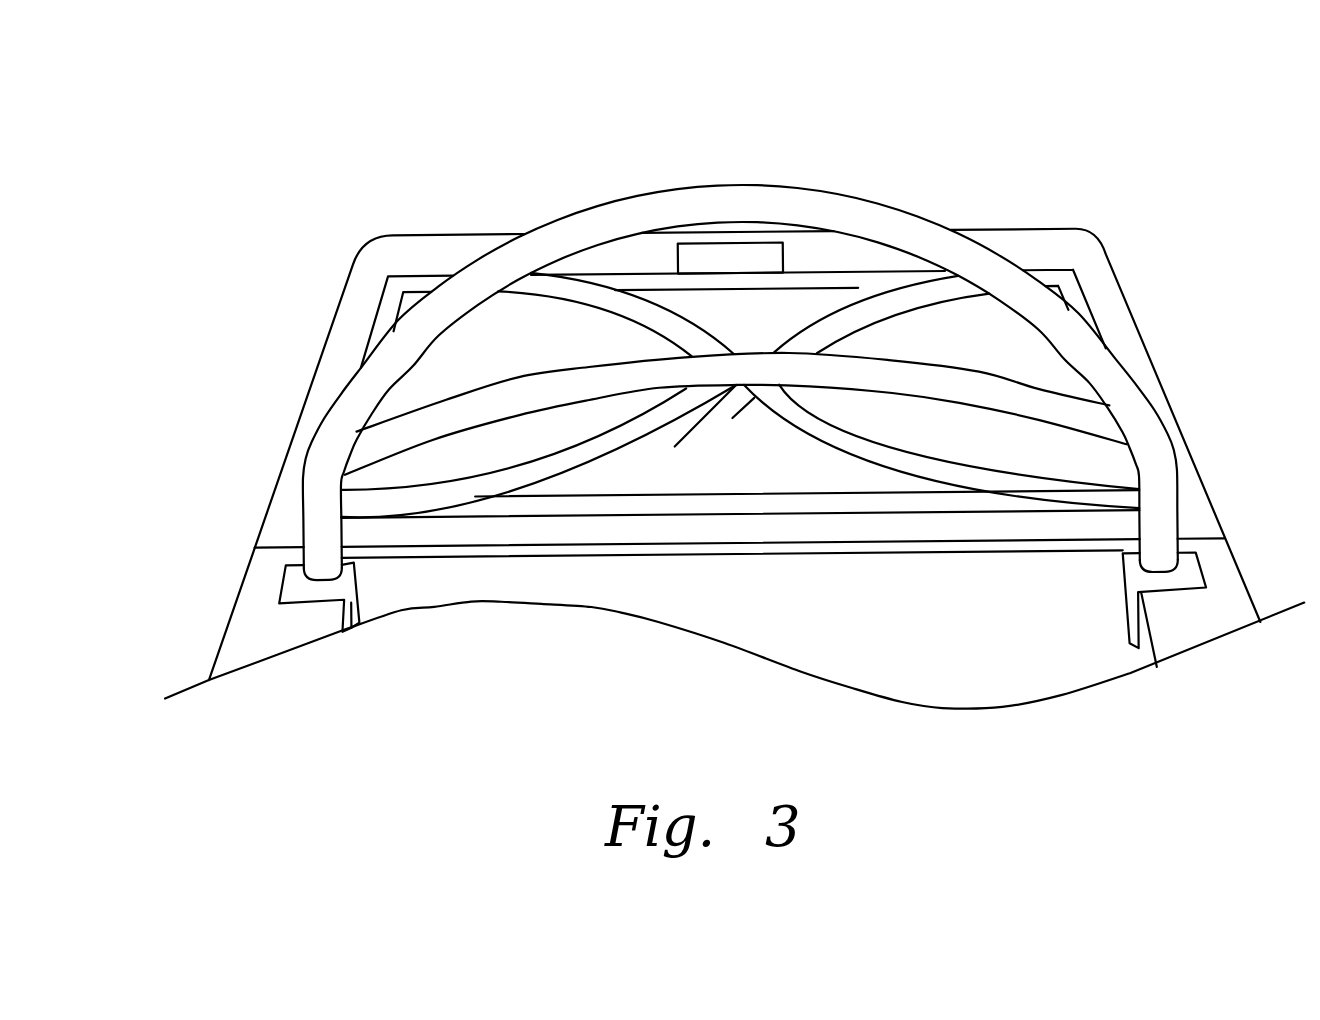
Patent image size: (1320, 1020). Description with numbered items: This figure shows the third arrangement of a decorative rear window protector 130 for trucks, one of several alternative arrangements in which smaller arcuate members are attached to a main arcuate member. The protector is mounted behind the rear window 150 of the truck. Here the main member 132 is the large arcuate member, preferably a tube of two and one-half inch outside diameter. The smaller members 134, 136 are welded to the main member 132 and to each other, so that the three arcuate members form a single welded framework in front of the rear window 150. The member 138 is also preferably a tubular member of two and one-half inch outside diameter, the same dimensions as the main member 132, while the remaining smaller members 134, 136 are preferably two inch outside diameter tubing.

The rear window protector 130 is at (549, 194).
The main member 132 is at (638, 213).
The smaller member 134 is at (872, 293).
The smaller member 136 is at (1003, 478).
The tubular member 138 is at (1010, 395).
The rear window 150 is at (1083, 290).